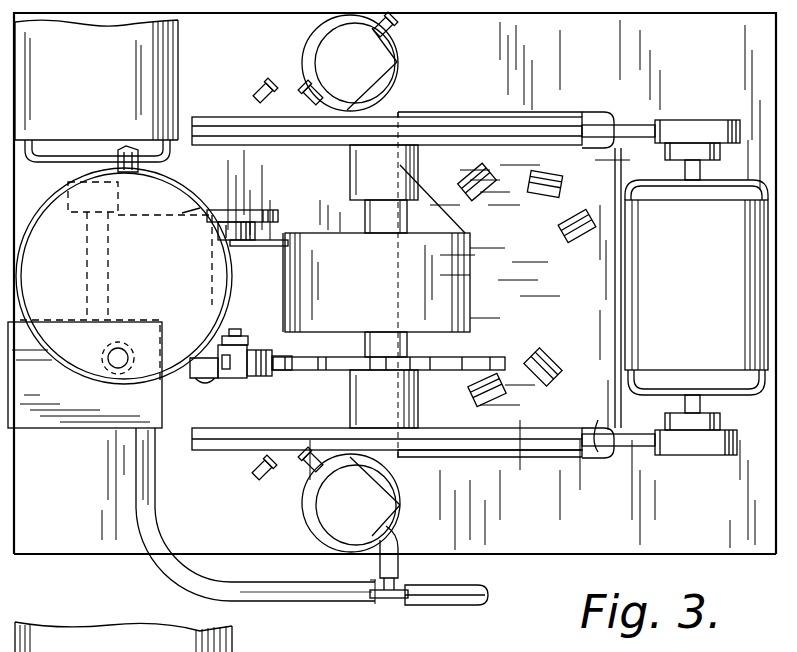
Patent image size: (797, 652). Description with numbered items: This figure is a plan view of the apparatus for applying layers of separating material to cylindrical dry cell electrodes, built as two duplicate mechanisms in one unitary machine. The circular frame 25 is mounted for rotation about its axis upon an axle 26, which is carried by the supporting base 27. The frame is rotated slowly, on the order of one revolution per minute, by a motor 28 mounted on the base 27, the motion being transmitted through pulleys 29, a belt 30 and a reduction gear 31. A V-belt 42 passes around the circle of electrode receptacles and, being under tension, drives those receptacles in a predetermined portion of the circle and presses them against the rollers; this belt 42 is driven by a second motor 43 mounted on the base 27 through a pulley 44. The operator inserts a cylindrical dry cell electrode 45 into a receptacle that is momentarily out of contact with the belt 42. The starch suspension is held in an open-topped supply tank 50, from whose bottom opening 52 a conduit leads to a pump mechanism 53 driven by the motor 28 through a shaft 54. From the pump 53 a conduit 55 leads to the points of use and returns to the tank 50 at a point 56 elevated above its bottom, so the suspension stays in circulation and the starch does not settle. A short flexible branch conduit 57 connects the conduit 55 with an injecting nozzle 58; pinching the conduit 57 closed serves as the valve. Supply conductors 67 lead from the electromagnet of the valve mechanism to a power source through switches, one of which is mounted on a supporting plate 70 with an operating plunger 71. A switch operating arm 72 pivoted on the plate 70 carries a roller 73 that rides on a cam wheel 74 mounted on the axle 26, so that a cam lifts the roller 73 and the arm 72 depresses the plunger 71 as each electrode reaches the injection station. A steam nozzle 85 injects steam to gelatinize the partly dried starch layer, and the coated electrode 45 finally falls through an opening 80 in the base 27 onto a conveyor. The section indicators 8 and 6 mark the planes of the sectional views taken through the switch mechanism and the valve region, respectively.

The circular frame 25 is at (214, 108).
The axle 26 is at (470, 334).
The supporting base 27 is at (517, 556).
The motor 28 is at (178, 42).
The pulleys 29 is at (246, 210).
The belt 30 is at (184, 213).
The reduction gear 31 is at (295, 235).
The V-belt 42 is at (621, 424).
The motor 43 is at (655, 275).
The pulley 44 is at (712, 456).
The cylindrical dry cell electrode 45 is at (577, 240).
The supply tank 50 is at (123, 276).
The opening 52 is at (128, 353).
The pump mechanism 53 is at (84, 430).
The shaft 54 is at (108, 270).
The conduit 55 is at (327, 603).
The point 56 is at (140, 167).
The branch conduit 57 is at (402, 568).
The injecting nozzle 58 is at (305, 95).
The supply conductors 67 is at (215, 381).
The supporting plate 70 is at (240, 346).
The operating plunger 71 is at (232, 380).
The switch operating arm 72 is at (252, 377).
The roller 73 is at (282, 372).
The cam wheel 74 is at (336, 357).
The opening 80 is at (606, 444).
The nozzle 85 is at (262, 82).
The section line 8- 8 is at (185, 397).
The section line 6- 6 is at (385, 612).